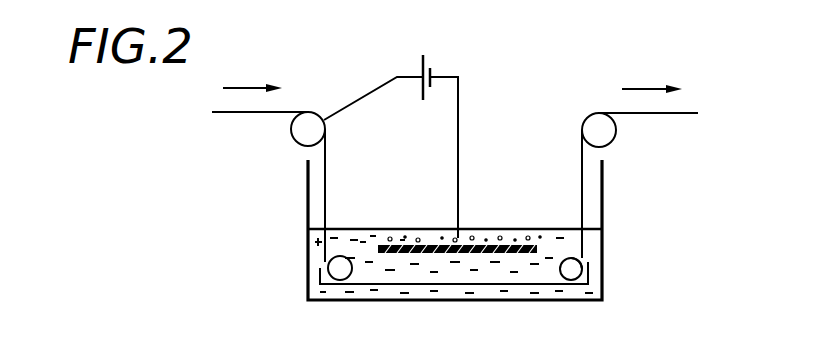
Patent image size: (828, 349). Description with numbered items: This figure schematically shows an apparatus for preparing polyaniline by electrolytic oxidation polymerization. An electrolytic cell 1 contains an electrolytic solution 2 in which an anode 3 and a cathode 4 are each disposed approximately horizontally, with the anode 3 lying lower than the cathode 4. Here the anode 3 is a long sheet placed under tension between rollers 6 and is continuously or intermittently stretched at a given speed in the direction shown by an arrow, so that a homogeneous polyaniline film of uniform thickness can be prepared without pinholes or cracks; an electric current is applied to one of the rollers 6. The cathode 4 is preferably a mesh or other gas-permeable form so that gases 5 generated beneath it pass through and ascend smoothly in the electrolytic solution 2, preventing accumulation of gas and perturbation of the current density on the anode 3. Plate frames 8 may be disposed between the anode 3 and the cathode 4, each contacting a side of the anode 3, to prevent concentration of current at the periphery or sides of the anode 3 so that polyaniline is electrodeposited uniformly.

The electrolytic cell 1 is at (605, 205).
The electrolytic solution 2 is at (512, 290).
The anode 3 is at (405, 282).
The cathode 4 is at (393, 237).
The gases 5 is at (428, 237).
The rollers 6 is at (307, 118).
The plate frames 8 is at (577, 257).